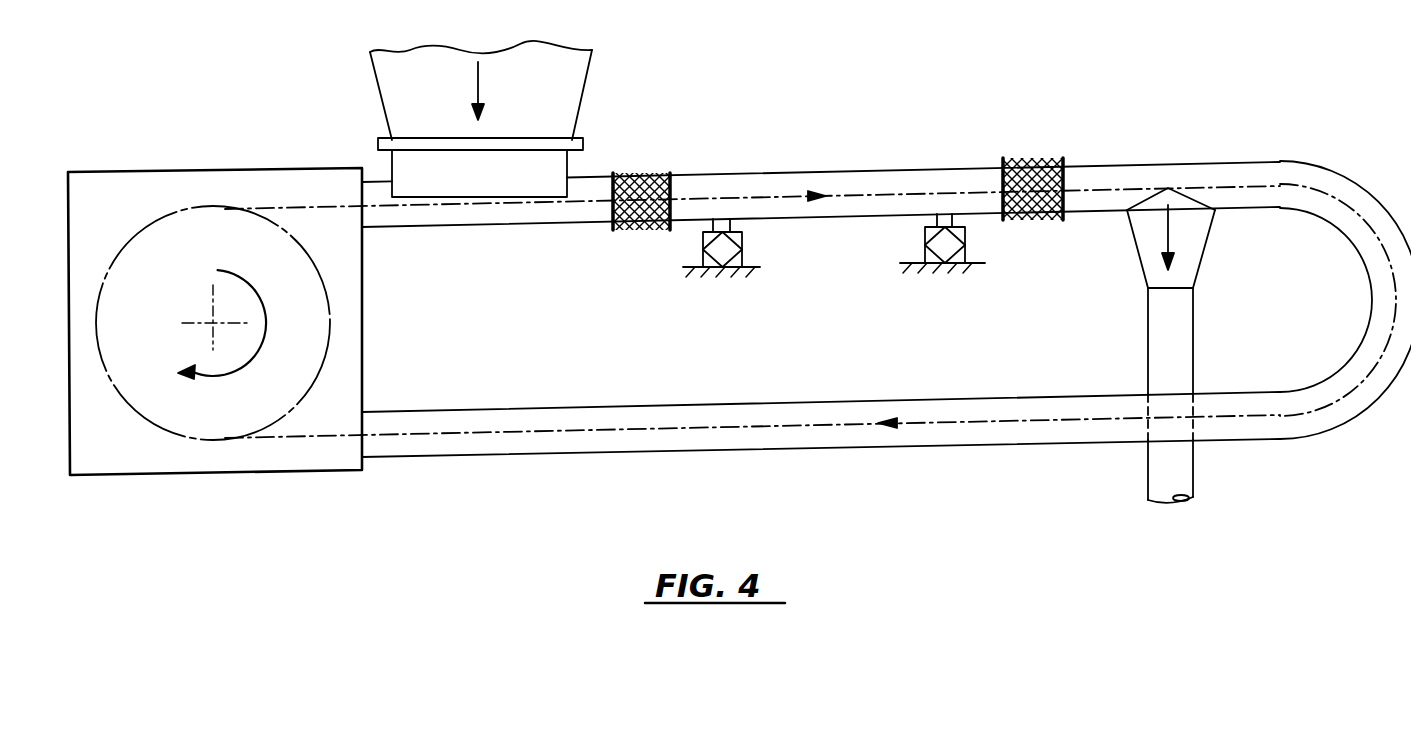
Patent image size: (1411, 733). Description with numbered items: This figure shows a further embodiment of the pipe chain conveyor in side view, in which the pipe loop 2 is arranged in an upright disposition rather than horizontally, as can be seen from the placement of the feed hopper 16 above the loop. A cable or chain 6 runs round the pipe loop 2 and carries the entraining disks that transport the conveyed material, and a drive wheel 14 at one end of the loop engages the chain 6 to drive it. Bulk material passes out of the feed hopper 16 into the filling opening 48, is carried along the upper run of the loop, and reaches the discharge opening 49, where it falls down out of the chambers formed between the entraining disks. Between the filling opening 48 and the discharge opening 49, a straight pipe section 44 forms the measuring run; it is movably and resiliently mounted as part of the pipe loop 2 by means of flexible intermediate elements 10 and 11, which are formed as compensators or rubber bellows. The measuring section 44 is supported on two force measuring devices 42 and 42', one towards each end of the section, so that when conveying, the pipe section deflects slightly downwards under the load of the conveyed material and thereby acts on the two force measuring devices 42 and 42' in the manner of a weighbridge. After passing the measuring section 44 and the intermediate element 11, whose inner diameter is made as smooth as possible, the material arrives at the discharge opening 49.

The pipe loop 2 is at (1250, 140).
The cable or chain 6 is at (287, 207).
The flexible intermediate element 10 is at (650, 177).
The flexible intermediate element 11 is at (1028, 170).
The chain wheel 14 is at (298, 237).
The feed hopper 16 is at (593, 62).
The force measuring device 42 is at (699, 248).
The force measuring device 42' is at (965, 243).
The straight pipe section 44 is at (797, 173).
The filling opening 48 is at (555, 170).
The discharge opening 49 is at (1188, 213).